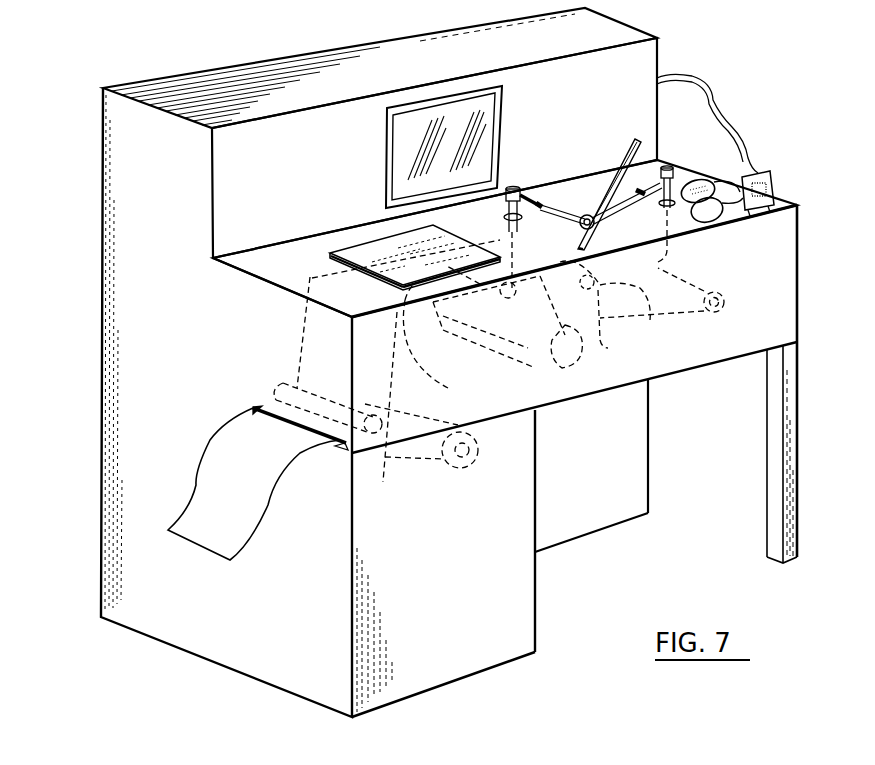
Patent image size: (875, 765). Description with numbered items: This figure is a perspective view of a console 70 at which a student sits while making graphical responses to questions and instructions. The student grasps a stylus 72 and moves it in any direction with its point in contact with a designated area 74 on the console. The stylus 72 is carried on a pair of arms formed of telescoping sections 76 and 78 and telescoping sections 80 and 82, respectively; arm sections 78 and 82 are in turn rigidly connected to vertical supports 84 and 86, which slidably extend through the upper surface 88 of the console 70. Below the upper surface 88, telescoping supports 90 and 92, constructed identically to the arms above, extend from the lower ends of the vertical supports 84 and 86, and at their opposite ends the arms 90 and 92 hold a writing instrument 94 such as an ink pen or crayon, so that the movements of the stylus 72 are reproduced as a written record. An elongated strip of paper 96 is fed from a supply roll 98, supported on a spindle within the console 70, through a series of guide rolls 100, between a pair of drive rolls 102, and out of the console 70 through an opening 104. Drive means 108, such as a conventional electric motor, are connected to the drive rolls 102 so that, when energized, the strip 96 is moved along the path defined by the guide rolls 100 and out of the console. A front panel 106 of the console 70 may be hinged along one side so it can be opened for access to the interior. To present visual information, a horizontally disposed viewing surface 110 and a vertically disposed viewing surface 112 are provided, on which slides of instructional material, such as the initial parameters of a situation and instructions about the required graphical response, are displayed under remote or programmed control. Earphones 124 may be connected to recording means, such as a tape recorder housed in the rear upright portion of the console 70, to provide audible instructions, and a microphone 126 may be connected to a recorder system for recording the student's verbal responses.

The console 70 is at (96, 402).
The stylus 72 is at (617, 166).
The designated area 74 is at (578, 200).
The telescoping arm section 76 is at (572, 200).
The telescoping arm section 78 is at (504, 216).
The telescoping arm section 80 is at (648, 124).
The telescoping arm section 82 is at (652, 167).
The vertical support 84 is at (512, 187).
The vertical support 86 is at (673, 177).
The upper surface 88 is at (291, 273).
The telescoping support 90 is at (514, 296).
The telescoping support 92 is at (650, 320).
The writing instrument 94 is at (607, 314).
The strip of paper 96 is at (575, 358).
The supply roll 98 is at (727, 300).
The guide rolls 100 is at (455, 388).
The drive rolls 102 is at (383, 485).
The opening 104 is at (253, 410).
The front panel 106 is at (770, 325).
The drive means 108 is at (468, 470).
The horizontally disposed viewing surface 110 is at (368, 252).
The vertically disposed viewing surface 112 is at (403, 162).
The earphones 124 is at (707, 212).
The microphone 126 is at (776, 193).